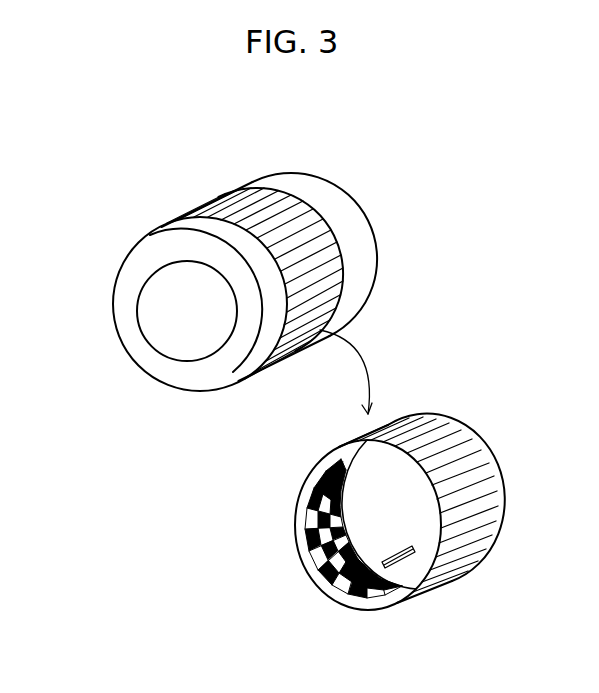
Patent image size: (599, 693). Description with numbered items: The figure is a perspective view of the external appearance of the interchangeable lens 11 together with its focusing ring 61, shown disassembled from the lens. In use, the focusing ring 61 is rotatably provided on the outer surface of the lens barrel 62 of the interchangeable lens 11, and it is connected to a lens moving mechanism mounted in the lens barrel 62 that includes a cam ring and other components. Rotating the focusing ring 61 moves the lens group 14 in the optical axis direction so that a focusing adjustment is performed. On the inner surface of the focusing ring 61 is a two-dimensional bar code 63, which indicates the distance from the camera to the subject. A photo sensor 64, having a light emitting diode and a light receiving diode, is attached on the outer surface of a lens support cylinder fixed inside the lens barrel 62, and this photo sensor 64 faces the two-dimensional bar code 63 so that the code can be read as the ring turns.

The interchangeable lens 11 is at (213, 257).
The lens group 14 is at (155, 313).
The focusing ring 61 is at (241, 198).
The lens barrel 62 is at (303, 186).
The two-dimensional bar code 63 is at (312, 576).
The photo sensor 64 is at (403, 562).